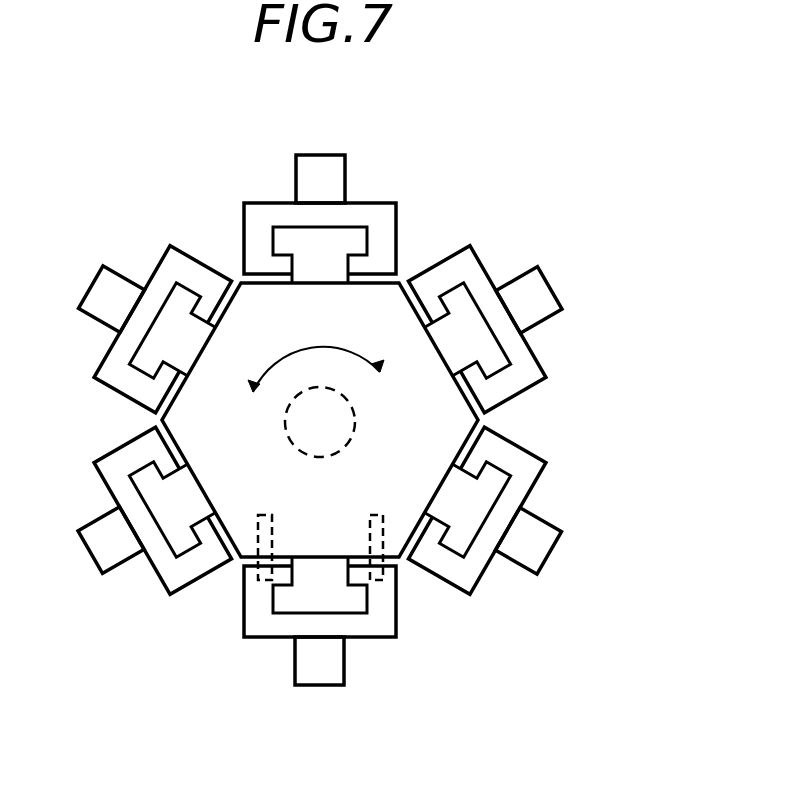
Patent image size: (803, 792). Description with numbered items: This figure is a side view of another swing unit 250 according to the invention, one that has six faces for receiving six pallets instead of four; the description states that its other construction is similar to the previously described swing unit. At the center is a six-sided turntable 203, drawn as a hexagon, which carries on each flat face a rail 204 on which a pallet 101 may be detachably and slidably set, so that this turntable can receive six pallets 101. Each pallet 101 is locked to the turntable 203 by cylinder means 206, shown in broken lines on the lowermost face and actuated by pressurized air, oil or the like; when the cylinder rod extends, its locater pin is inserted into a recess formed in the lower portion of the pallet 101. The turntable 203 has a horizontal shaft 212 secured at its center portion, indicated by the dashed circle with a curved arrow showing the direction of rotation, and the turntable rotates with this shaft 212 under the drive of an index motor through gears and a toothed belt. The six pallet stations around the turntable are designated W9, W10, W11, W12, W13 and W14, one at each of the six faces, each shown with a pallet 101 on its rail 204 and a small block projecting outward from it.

The hexagonal index table 203 is at (177, 417).
The pallet 101 is at (527, 467).
The holder clamp recess 204 is at (358, 600).
The positioning pins 206 is at (270, 520).
The rotary shaft 212 is at (354, 414).
The indexing assembly 250 is at (526, 418).
The workpiece W9 is at (303, 165).
The workpiece W10 is at (113, 278).
The workpiece W11 is at (110, 562).
The workpiece W12 is at (298, 670).
The workpiece W13 is at (528, 562).
The workpiece W14 is at (537, 267).